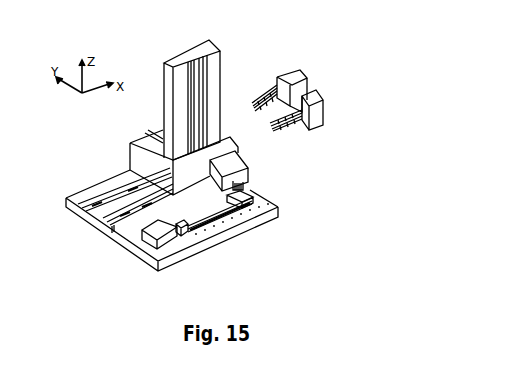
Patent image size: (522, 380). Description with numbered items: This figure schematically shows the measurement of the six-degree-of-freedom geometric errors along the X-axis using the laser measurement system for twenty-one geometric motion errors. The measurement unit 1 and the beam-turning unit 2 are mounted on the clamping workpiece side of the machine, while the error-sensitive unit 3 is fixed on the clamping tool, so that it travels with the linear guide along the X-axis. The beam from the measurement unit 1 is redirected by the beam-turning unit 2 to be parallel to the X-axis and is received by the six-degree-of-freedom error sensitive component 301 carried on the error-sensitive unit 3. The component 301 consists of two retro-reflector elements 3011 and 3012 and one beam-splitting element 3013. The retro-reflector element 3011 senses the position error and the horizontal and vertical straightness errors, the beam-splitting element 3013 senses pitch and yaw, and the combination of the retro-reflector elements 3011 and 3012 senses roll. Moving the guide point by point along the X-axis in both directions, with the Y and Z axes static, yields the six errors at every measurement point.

The 6DOF GME simultaneous measurement unit 1 is at (150, 230).
The beam-turning unit 2 is at (178, 223).
The error-sensitive unit 3 is at (227, 198).
The 6DOF error sensitive component 301 is at (295, 111).
The retro-reflector element 3011 is at (311, 99).
The retro-reflector element 3012 is at (293, 83).
The beam-splitting element 3013 is at (277, 90).